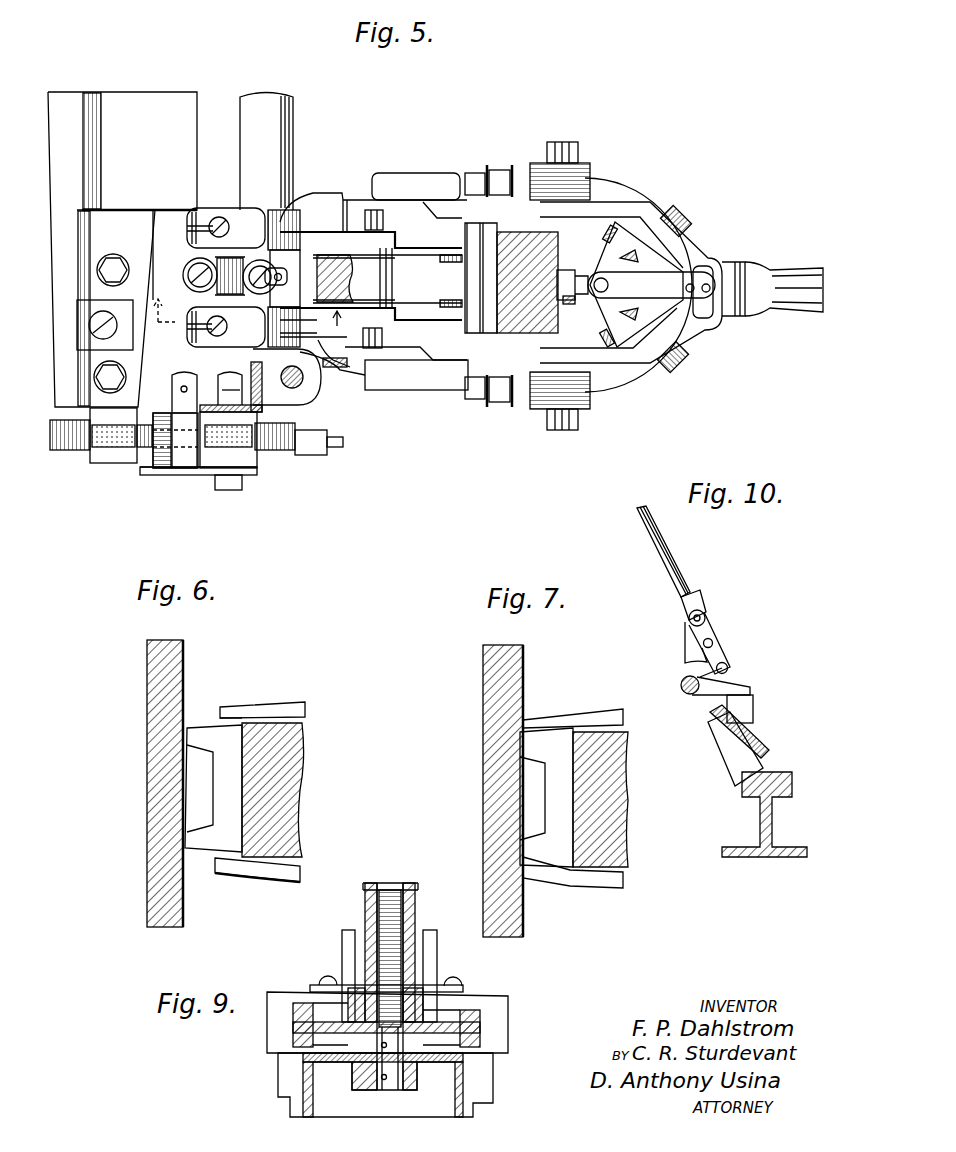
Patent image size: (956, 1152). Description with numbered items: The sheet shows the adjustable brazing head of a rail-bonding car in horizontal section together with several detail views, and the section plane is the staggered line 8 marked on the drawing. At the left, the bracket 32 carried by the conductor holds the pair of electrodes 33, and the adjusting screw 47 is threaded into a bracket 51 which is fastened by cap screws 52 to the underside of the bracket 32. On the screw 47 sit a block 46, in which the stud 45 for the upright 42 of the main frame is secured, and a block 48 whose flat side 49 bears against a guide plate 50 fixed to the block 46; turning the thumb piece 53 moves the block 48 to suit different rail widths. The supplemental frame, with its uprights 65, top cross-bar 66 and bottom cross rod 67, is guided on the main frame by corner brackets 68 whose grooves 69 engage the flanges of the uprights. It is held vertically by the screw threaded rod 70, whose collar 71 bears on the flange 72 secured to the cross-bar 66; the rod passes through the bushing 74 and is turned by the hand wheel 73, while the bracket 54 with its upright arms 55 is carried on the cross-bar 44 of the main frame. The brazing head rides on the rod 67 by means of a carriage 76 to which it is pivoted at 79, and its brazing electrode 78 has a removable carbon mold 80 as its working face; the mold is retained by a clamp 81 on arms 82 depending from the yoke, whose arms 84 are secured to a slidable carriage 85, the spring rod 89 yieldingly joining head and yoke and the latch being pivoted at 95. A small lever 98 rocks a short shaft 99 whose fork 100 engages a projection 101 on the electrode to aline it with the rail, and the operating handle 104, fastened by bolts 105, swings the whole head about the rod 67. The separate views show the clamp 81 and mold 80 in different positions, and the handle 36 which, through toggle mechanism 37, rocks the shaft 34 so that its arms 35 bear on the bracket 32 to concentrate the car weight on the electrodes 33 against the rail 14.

In FIG. 5, the bracket 32 is at (73, 93).
In FIG. 10, the bracket 32 is at (758, 746).
In FIG. 5, the cap screws 52 is at (137, 262).
In FIG. 5, the bottom cross rod 67 is at (284, 143).
In FIG. 5, the slidable carriage 85 is at (240, 215).
In FIG. 5, the carriage 76 is at (192, 263).
In FIG. 5, the pivot 79 is at (258, 262).
In FIG. 5, the rod 89 is at (273, 282).
In FIG. 5, the arms 84 is at (316, 212).
In FIG. 5, the clamp 81 is at (350, 190).
In FIG. 6, the clamp 81 is at (250, 706).
In FIG. 7, the clamp 81 is at (555, 715).
In FIG. 5, the arms 82 is at (598, 182).
In FIG. 5, the brazing electrode 78 is at (607, 383).
In FIG. 6, the brazing electrode 78 is at (290, 750).
In FIG. 7, the brazing electrode 78 is at (612, 800).
In FIG. 5, the lever 98 is at (681, 303).
In FIG. 5, the fork 100 is at (593, 249).
In FIG. 5, the short shaft 99 is at (608, 285).
In FIG. 5, the projection 101 is at (573, 303).
In FIG. 5, the bolts 105 is at (688, 226).
In FIG. 5, the operating handle 104 is at (788, 273).
In FIG. 5, the section line 8 is at (246, 324).
In FIG. 5, the pivot 95 is at (377, 348).
In FIG. 5, the uprights 65 is at (340, 370).
In FIG. 5, the corner brackets 68 is at (288, 386).
In FIG. 5, the grooves 69 is at (305, 383).
In FIG. 5, the stud 45 is at (220, 381).
In FIG. 5, the adjusting screw 47 is at (57, 452).
In FIG. 5, the thumb piece 53 is at (348, 444).
In FIG. 5, the bracket 51 is at (112, 462).
In FIG. 5, the guide plate 50 is at (155, 472).
In FIG. 5, the block 48 is at (187, 470).
In FIG. 5, the flat side 49 is at (190, 463).
In FIG. 5, the block 46 is at (240, 464).
In FIG. 5, the upright 42 is at (232, 415).
In FIG. 6, the carbon mold 80 is at (218, 838).
In FIG. 7, the carbon mold 80 is at (547, 852).
In FIG. 10, the handle 36 is at (672, 558).
In FIG. 10, the toggle mechanism 37 is at (716, 642).
In FIG. 10, the arms 35 is at (750, 687).
In FIG. 10, the shaft 34 is at (687, 695).
In FIG. 10, the electrodes 33 is at (737, 757).
In FIG. 10, the rail 14 is at (772, 822).
In FIG. 9, the screw threaded rod 70 is at (412, 907).
In FIG. 9, the collar 71 is at (417, 1081).
In FIG. 9, the upright arms 55 is at (343, 953).
In FIG. 9, the bushing 74 is at (412, 950).
In FIG. 9, the cross-bar 44 is at (387, 1008).
In FIG. 9, the bracket 54 is at (465, 988).
In FIG. 9, the hand wheel 73 is at (480, 1027).
In FIG. 9, the top cross-bar 66 is at (494, 1079).
In FIG. 9, the flange 72 is at (384, 1079).